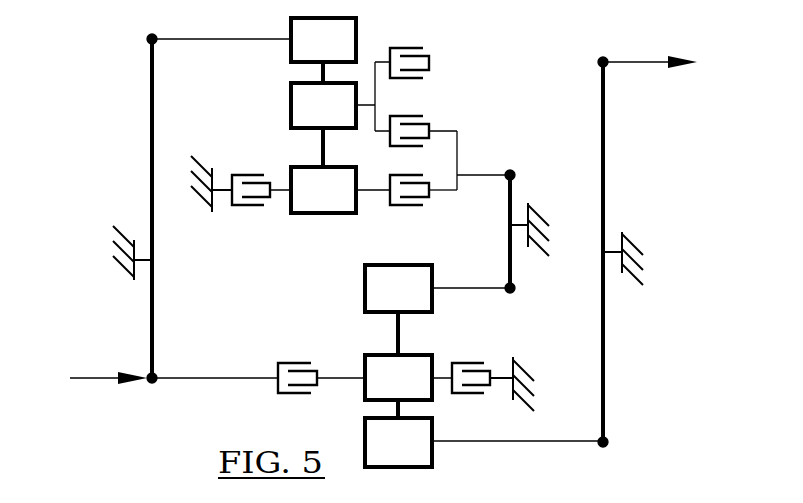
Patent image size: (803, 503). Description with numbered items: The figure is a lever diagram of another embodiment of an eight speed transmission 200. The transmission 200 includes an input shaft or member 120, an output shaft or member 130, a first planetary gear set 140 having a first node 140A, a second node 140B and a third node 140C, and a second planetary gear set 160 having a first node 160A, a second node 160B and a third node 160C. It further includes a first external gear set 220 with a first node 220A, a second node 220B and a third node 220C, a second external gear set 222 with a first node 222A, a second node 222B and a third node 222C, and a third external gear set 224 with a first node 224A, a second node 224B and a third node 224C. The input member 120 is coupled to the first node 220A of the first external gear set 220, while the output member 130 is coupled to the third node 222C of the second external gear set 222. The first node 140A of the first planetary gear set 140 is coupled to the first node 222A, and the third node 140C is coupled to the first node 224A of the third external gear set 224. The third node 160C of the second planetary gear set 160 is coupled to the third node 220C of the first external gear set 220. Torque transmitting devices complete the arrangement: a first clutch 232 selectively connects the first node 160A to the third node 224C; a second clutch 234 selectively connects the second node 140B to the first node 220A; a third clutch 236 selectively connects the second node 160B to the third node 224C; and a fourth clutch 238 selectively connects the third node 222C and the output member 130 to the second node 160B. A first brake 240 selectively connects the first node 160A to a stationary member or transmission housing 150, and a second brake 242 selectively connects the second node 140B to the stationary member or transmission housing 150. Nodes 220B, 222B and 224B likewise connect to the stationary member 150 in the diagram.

The input shaft or member 120 is at (90, 375).
The output shaft or member 130 is at (650, 66).
The first planetary gear set 140 is at (348, 407).
The first node of first planetary gear set 140A is at (484, 442).
The second node of first planetary gear set 140B is at (384, 377).
The third node of first planetary gear set 140C is at (398, 288).
The stationary member or transmission housing 150 is at (198, 166).
The second planetary gear set 160 is at (317, 256).
The first node of second planetary gear set 160A is at (330, 190).
The second node of second planetary gear set 160B is at (340, 96).
The third node of second planetary gear set 160C is at (323, 40).
The eight speed transmission 200 is at (705, 65).
The first external gear set 220 is at (120, 400).
The first node of first external gear set 220A is at (151, 386).
The second node of first external gear set 220B is at (151, 258).
The third node of first external gear set 220C is at (147, 41).
The second external gear set 222 is at (620, 450).
The first node of second external gear set 222A is at (607, 440).
The second node of second external gear set 222B is at (605, 251).
The third node of second external gear set 222C is at (600, 56).
The third external gear set 224 is at (520, 312).
The first node of third external gear set 224A is at (508, 293).
The second node of third external gear set 224B is at (516, 226).
The third node of third external gear set 224C is at (511, 170).
The first clutch 232 is at (412, 173).
The second clutch 234 is at (288, 362).
The third clutch 236 is at (415, 115).
The fourth clutch 238 is at (415, 47).
The first brake 240 is at (248, 174).
The second brake 242 is at (468, 395).